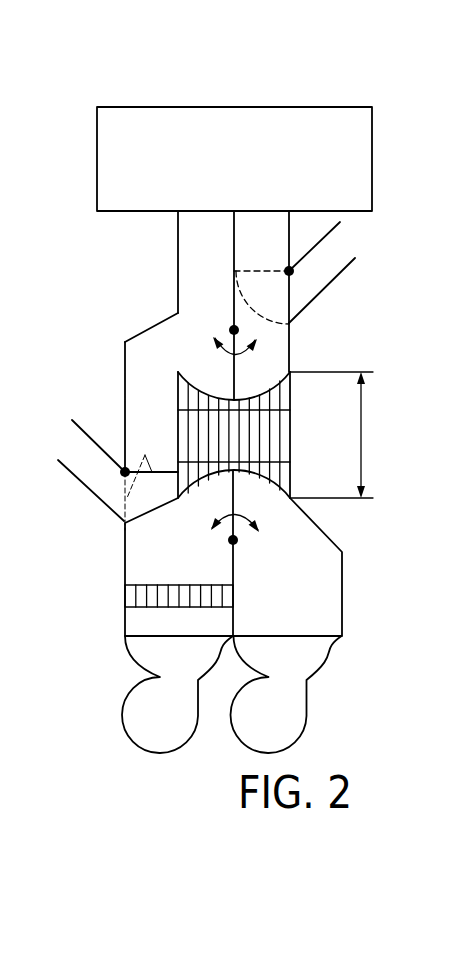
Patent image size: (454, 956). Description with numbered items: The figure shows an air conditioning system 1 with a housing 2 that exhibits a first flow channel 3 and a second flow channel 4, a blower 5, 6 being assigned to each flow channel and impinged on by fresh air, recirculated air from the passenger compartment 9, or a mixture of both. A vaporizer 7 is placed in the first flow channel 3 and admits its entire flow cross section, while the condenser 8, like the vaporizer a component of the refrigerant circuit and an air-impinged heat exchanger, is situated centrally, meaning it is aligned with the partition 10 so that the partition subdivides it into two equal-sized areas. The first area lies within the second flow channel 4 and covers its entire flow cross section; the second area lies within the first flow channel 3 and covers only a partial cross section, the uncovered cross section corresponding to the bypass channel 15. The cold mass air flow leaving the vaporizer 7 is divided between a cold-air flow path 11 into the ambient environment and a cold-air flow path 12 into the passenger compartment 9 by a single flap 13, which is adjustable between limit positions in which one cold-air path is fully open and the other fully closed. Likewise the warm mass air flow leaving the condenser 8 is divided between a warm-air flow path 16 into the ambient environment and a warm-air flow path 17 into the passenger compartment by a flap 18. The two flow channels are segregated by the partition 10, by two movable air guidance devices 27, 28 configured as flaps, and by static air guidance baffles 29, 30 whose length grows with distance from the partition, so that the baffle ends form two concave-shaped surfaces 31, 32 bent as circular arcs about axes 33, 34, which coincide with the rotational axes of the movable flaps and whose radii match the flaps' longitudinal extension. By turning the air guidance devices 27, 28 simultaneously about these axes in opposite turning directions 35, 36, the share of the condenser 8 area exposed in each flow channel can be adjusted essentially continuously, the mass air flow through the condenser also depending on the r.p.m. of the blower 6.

The air conditioning system 1 is at (384, 155).
The housing 2 is at (178, 274).
The first flow channel 3 is at (113, 363).
The second flow channel 4 is at (357, 572).
The blower 5 is at (143, 715).
The blower 6 is at (286, 715).
The vaporizer 7 is at (228, 593).
The condenser 8 is at (286, 447).
The passenger compartment 9 is at (247, 166).
The partition 10 is at (236, 565).
The cold-air flow path 11 is at (88, 468).
The cold-air flow path 12 is at (178, 321).
The flap 13 is at (142, 476).
The bypass channel 15 is at (143, 409).
The warm-air flow path 16 is at (320, 265).
The warm-air flow path 17 is at (274, 252).
The flap 18 is at (289, 271).
The air guidance device 27 is at (232, 497).
The air guidance device 28 is at (232, 374).
The air guidance baffle 29 is at (183, 477).
The air guidance baffle 30 is at (183, 398).
The concave-shaped surface 31 is at (257, 478).
The concave-shaped surface 32 is at (253, 393).
The rotational axis 33 is at (233, 540).
The rotational axis 34 is at (234, 330).
The turning direction 35 is at (260, 338).
The turning direction 36 is at (210, 529).